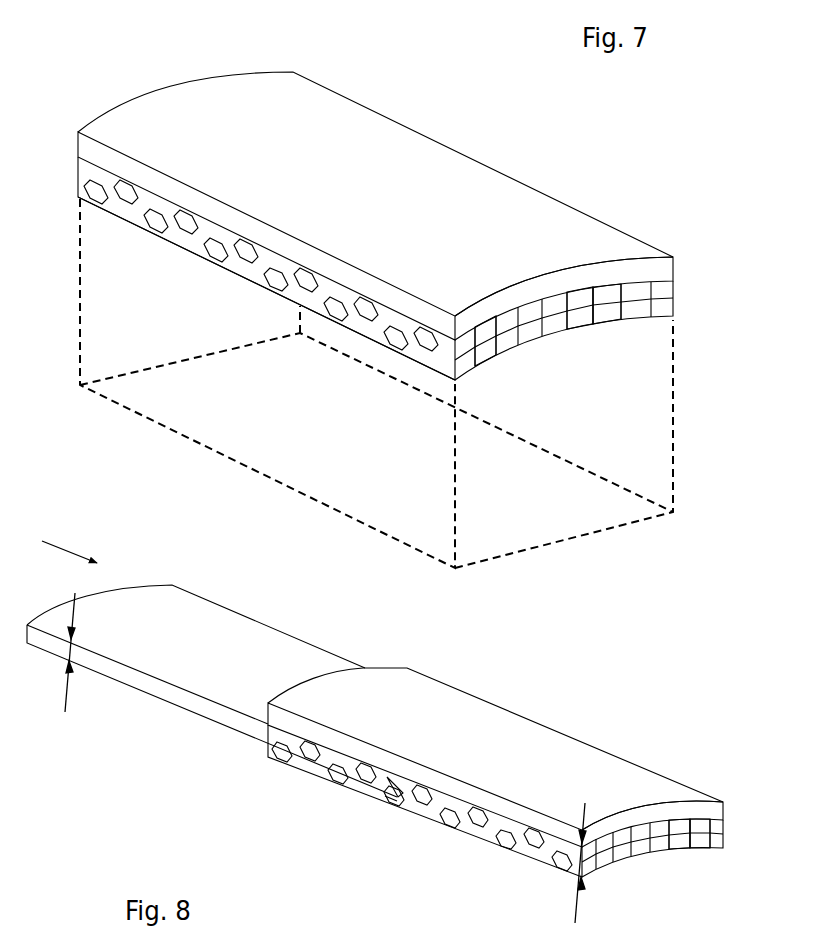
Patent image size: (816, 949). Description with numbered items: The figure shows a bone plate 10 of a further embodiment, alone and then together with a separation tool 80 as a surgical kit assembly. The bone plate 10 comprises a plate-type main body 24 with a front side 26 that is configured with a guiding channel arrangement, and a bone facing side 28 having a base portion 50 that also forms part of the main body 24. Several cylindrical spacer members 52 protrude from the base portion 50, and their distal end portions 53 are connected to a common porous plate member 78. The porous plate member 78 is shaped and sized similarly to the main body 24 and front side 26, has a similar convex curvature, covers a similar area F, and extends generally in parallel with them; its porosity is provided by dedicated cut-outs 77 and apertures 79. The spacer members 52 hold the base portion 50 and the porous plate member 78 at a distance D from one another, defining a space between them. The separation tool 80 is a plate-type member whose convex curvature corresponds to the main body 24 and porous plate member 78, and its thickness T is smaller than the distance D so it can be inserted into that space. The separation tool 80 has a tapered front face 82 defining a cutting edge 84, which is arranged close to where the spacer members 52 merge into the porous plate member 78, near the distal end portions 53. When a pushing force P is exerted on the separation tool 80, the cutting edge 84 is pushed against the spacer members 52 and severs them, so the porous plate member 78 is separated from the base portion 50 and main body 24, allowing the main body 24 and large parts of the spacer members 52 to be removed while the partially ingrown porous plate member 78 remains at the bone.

In FIG. 7, the bone plate 10 is at (390, 88).
In FIG. 8, the bone plate 10 is at (477, 660).
In FIG. 7, the plate-type main body 24 is at (487, 248).
In FIG. 8, the plate-type main body 24 is at (579, 777).
In FIG. 7, the front side 26 is at (199, 108).
In FIG. 8, the front side 26 is at (495, 757).
In FIG. 7, the bone facing side 28 is at (175, 244).
In FIG. 7, the base portion 50 is at (645, 287).
In FIG. 8, the base portion 50 is at (715, 822).
In FIG. 7, the cylindrical spacer members 52 is at (585, 297).
In FIG. 8, the cylindrical spacer members 52 is at (683, 835).
In FIG. 7, the distal end portions 53 is at (478, 349).
In FIG. 8, the distal end portions 53 is at (484, 828).
In FIG. 7, the cut-outs 77 is at (200, 244).
In FIG. 7, the porous plate member 78 is at (582, 338).
In FIG. 8, the porous plate member 78 is at (698, 843).
In FIG. 7, the apertures 79 is at (250, 253).
In FIG. 8, the separation tool 80 is at (230, 586).
In FIG. 8, the tapered front face 82 is at (390, 808).
In FIG. 8, the cutting edge 84 is at (398, 805).
In FIG. 7, the area F is at (142, 418).
In FIG. 8, the pushing force P is at (69, 541).
In FIG. 8, the thickness T is at (53, 652).
In FIG. 8, the distance D is at (591, 863).